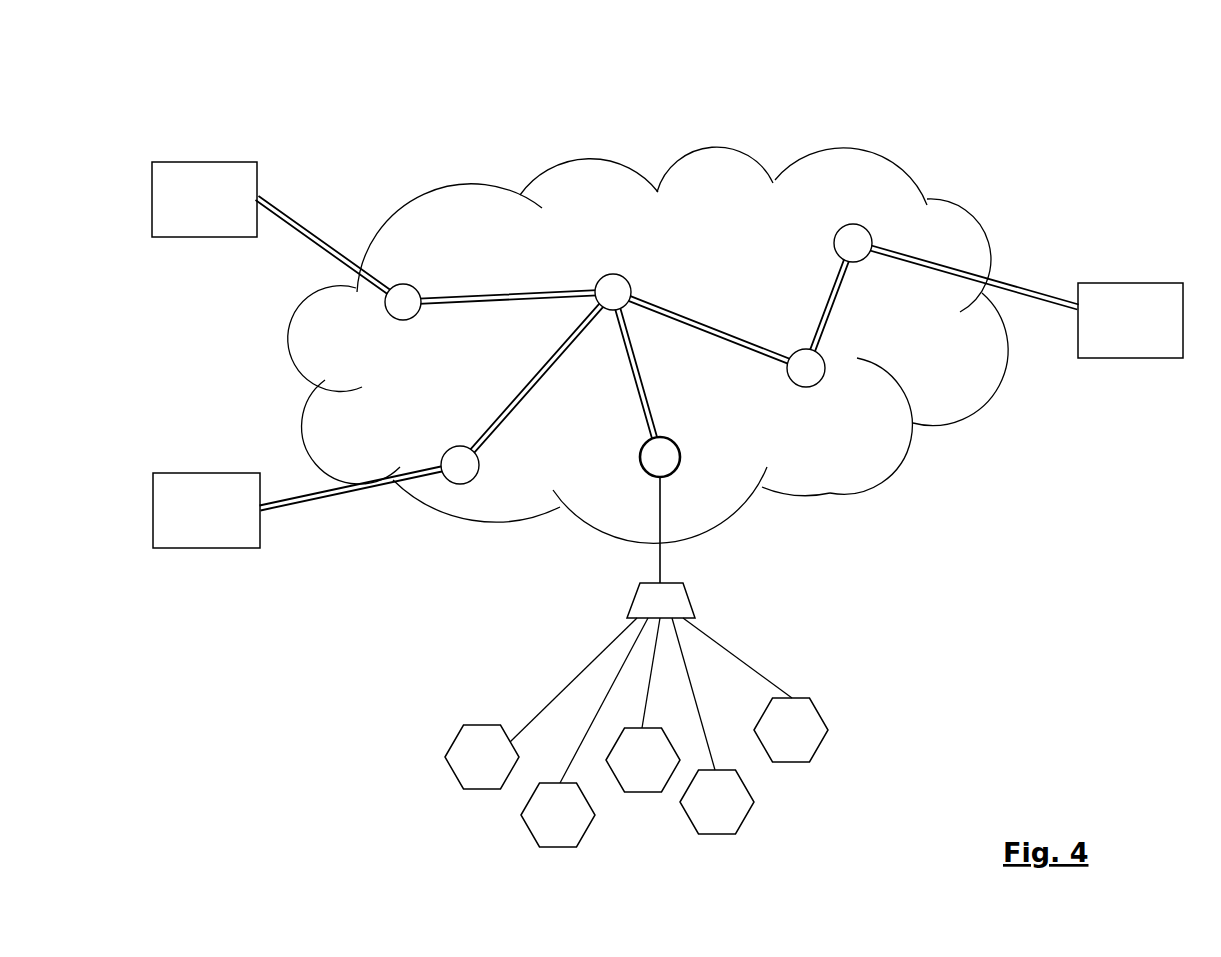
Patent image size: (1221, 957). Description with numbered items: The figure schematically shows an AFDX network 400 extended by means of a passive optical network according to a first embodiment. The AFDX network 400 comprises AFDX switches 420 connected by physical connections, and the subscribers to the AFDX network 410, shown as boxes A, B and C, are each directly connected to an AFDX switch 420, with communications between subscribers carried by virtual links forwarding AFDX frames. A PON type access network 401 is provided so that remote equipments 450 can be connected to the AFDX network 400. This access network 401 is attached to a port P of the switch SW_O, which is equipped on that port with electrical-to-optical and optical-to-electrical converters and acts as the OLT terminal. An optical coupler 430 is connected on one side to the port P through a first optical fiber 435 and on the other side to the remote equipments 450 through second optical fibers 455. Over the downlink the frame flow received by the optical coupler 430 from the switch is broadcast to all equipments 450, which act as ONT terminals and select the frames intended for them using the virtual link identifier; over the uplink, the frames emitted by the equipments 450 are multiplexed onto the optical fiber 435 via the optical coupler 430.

The AFDX network 400 is at (985, 232).
The PON type access network 401 is at (967, 562).
The subscribers to the AFDX network 410 is at (176, 161).
The AFDX switches 420 is at (847, 226).
The optical coupler 430 is at (690, 585).
The first optical fiber 435 is at (660, 518).
The remote equipments 450 is at (816, 709).
The second optical fibers 455 is at (578, 678).